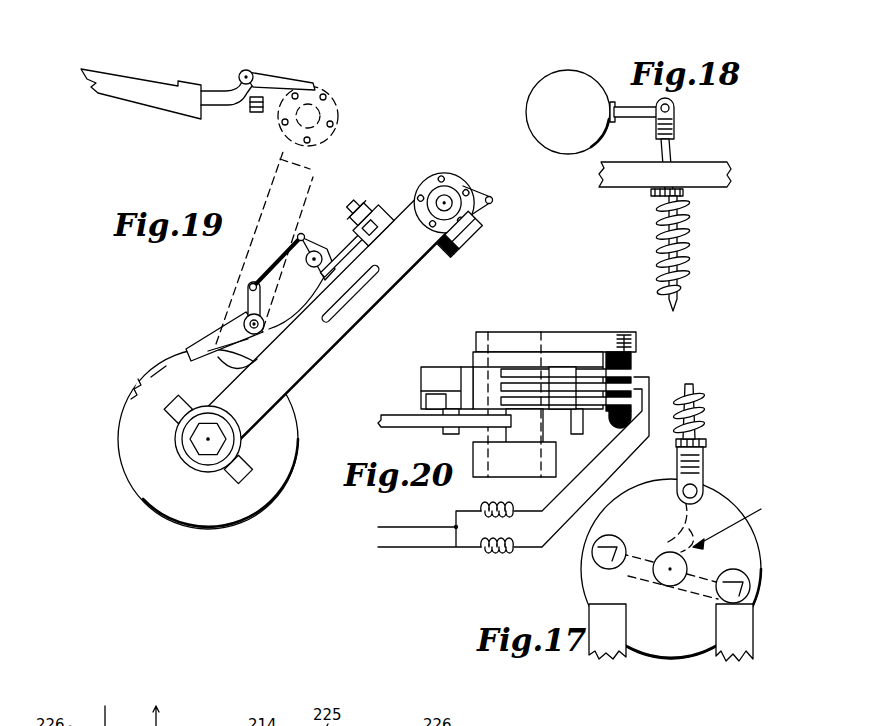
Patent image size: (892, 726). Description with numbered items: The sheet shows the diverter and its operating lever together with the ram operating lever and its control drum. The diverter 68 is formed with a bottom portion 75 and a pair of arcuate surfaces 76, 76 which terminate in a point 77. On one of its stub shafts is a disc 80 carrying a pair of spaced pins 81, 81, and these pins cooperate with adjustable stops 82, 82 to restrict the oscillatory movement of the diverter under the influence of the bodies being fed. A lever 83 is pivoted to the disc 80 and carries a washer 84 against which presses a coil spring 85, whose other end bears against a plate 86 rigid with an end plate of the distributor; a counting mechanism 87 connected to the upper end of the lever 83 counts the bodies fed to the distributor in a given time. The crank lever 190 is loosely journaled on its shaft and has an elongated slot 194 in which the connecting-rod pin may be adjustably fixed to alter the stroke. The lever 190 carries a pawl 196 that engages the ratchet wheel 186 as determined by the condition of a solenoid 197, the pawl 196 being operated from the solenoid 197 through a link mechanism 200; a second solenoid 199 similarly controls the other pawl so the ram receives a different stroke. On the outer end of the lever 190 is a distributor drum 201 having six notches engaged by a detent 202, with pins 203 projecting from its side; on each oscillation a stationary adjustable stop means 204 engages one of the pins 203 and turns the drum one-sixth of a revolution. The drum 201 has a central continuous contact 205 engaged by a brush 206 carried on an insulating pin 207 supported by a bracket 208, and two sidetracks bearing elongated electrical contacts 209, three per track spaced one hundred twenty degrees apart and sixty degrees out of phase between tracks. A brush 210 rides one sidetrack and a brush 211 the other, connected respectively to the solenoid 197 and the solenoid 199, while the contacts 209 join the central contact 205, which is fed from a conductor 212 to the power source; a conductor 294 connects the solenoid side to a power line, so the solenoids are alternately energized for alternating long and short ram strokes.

In FIG. 17, the diverter 68 is at (736, 523).
In FIG. 17, the bottom portion 75 is at (645, 583).
In FIG. 17, the arcuate surfaces 76 is at (648, 550).
In FIG. 17, the point 77 is at (693, 520).
In FIG. 17, the disc 80 is at (747, 557).
In FIG. 17, the pins 81 is at (742, 582).
In FIG. 17, the adjustable stops 82 is at (742, 633).
In FIG. 17, the lever 83 is at (686, 405).
In FIG. 17, the washer 84 is at (703, 438).
In FIG. 18, the coil spring 85 is at (690, 278).
In FIG. 18, the plate 86 is at (713, 180).
In FIG. 18, the counting mechanism 87 is at (583, 88).
In FIG. 19, the ratchet wheel 186 is at (140, 477).
In FIG. 19, the crank lever 190 is at (297, 358).
In FIG. 20, the crank lever 190 is at (402, 423).
In FIG. 19, the elongated slot 194 is at (343, 303).
In FIG. 19, the pawl 196 is at (207, 347).
In FIG. 19, the solenoid 197 is at (360, 214).
In FIG. 20, the solenoid 197 is at (492, 556).
In FIG. 20, the solenoid 199 is at (485, 504).
In FIG. 19, the link mechanism 200 is at (304, 237).
In FIG. 19, the distributor drum 201 is at (453, 170).
In FIG. 20, the distributor drum 201 is at (447, 366).
In FIG. 19, the detent 202 is at (466, 238).
In FIG. 19, the pins 203 is at (433, 173).
In FIG. 20, the pins 203 is at (513, 427).
In FIG. 19, the stationary adjustable stop means 204 is at (274, 80).
In FIG. 20, the central continuous contact 205 is at (428, 388).
In FIG. 20, the brush 206 is at (630, 390).
In FIG. 20, the insulating pin 207 is at (633, 350).
In FIG. 20, the bracket 208 is at (578, 338).
In FIG. 20, the elongated electrical contacts 209 is at (495, 370).
In FIG. 20, the brush 210 is at (562, 380).
In FIG. 20, the brush 211 is at (552, 405).
In FIG. 20, the conductor 212 is at (400, 528).
In FIG. 20, the conductor 294 is at (398, 550).